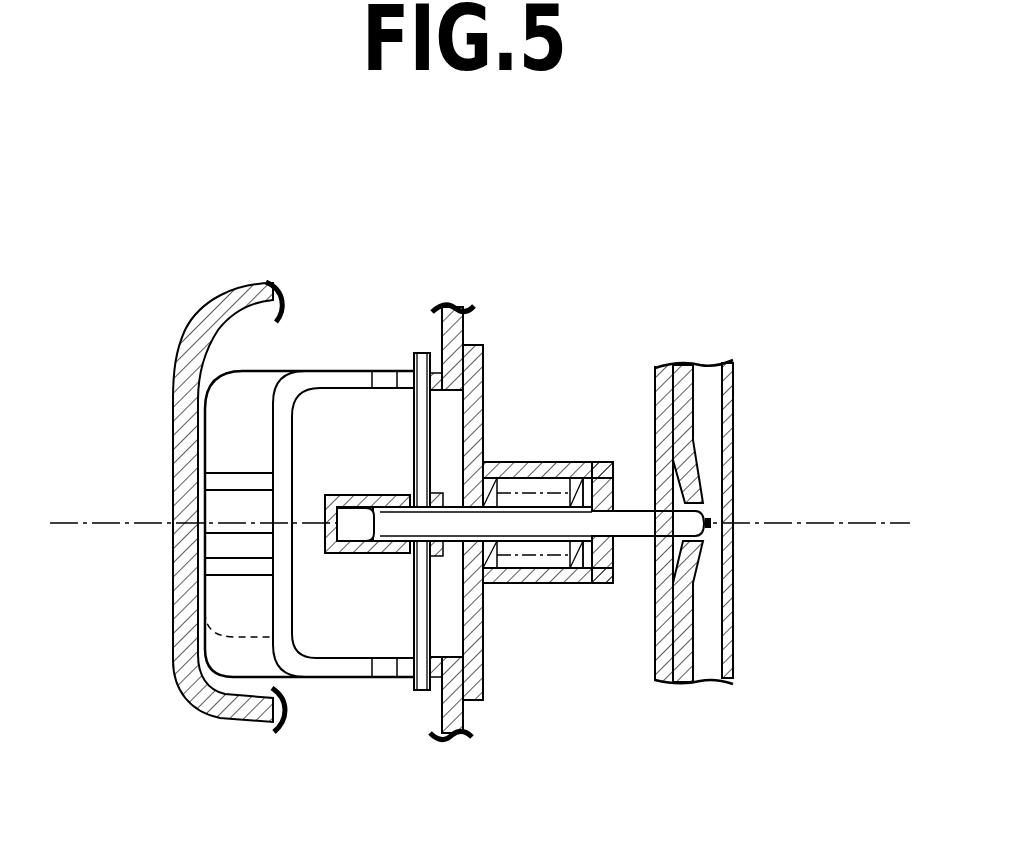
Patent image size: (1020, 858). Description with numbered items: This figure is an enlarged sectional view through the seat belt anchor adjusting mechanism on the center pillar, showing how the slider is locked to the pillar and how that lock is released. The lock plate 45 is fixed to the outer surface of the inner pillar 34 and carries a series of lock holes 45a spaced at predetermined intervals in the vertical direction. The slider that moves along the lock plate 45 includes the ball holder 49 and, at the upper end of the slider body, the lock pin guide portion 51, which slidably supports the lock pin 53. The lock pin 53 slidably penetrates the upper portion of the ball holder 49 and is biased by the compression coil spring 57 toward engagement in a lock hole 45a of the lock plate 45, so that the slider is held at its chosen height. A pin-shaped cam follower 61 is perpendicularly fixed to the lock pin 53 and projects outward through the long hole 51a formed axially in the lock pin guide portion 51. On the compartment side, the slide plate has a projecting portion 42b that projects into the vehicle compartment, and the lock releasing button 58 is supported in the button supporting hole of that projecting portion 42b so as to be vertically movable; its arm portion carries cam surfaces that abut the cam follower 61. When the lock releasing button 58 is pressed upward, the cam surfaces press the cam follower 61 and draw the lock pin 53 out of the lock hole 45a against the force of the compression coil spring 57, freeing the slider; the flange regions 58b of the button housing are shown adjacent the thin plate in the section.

The inner pillar 34 is at (733, 393).
The projecting portion 42b is at (173, 470).
The lock plate 45 is at (712, 613).
The lock hole 45a is at (712, 520).
The ball holder 49 is at (653, 642).
The lock pin guide portion 51 is at (527, 440).
The long hole 51a is at (371, 556).
The lock pin 53 is at (523, 530).
The compression coil spring 57 is at (574, 478).
The lock releasing button 58 is at (243, 356).
The flange 58b is at (382, 371).
The cam follower 61 is at (418, 695).